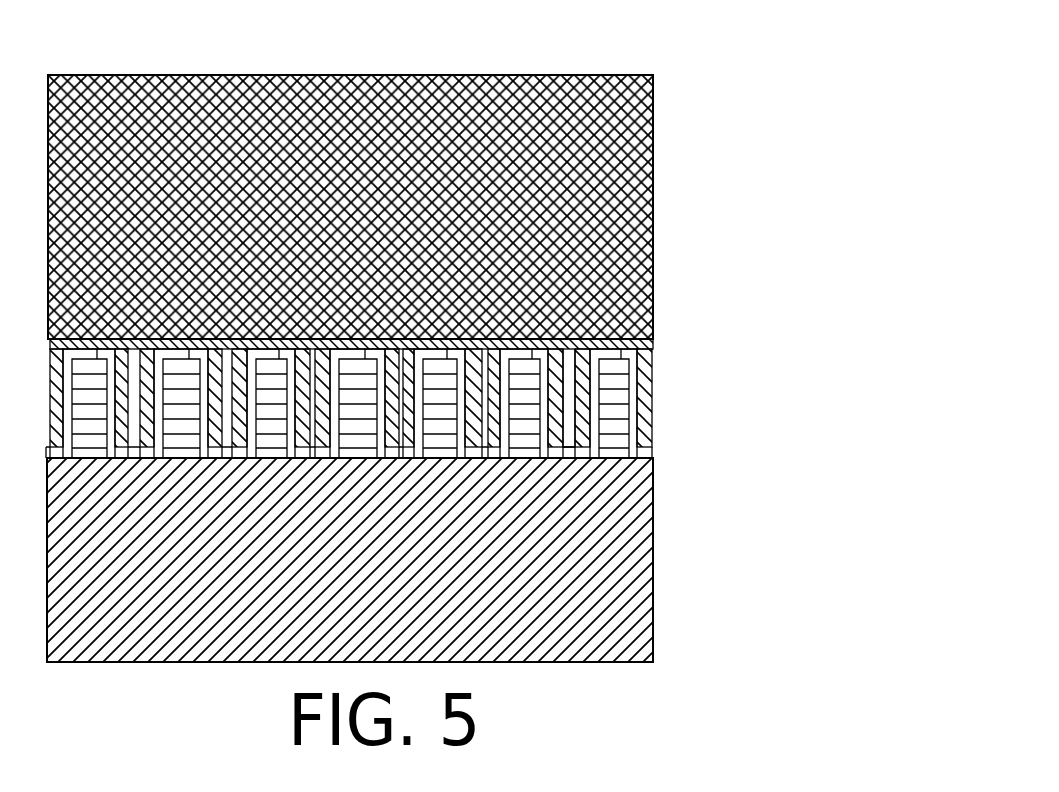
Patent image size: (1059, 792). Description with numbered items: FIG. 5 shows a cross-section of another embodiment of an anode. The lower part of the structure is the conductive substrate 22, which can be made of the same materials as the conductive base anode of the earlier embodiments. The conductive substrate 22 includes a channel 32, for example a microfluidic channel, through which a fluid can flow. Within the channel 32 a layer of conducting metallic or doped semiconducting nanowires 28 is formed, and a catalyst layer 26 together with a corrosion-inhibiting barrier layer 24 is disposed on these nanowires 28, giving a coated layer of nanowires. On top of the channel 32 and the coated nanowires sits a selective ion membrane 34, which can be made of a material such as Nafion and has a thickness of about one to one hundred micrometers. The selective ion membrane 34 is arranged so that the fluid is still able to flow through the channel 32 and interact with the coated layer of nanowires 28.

The conductive substrate 22 is at (653, 575).
The corrosion-inhibiting barrier layer 24 is at (640, 433).
The catalyst layer 26 is at (650, 378).
The conductive nanowires 28 is at (645, 361).
The channel 32 is at (573, 358).
The selective ion membrane 34 is at (653, 142).